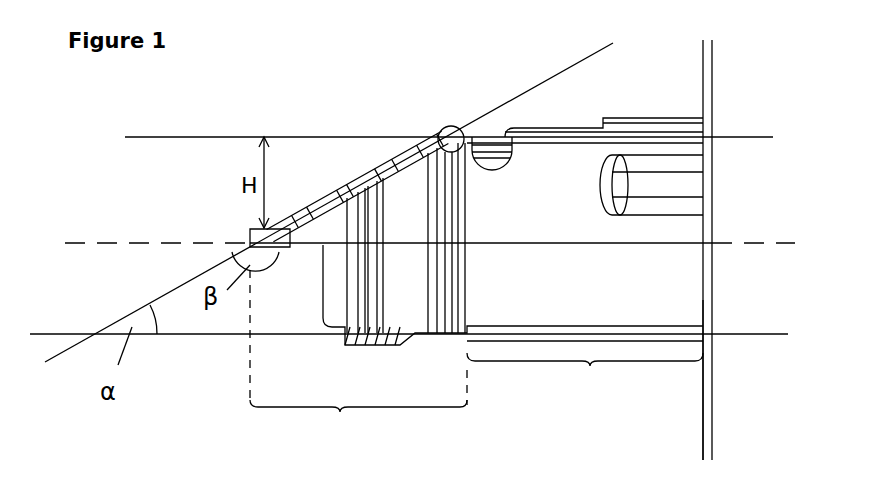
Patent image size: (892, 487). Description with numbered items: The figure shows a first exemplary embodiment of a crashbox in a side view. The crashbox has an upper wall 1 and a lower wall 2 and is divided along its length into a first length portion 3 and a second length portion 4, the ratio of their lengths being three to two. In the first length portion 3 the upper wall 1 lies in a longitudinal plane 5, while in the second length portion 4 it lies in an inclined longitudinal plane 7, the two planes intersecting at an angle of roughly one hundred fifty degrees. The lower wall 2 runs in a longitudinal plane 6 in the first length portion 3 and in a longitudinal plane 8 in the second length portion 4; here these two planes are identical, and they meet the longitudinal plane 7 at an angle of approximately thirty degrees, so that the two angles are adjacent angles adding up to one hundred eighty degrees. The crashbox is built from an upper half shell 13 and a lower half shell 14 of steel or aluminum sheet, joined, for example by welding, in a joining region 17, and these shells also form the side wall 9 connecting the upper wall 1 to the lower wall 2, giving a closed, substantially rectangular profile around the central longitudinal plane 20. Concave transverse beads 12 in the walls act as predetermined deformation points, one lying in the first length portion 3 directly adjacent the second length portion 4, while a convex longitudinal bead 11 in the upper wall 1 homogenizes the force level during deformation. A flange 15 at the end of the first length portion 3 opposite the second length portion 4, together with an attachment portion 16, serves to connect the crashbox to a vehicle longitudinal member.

The upper wall 1 is at (335, 185).
The lower wall 2 is at (350, 345).
The first length portion 3 is at (585, 381).
The second length portion 4 is at (358, 362).
The longitudinal plane 5 is at (729, 134).
The longitudinal plane 6 is at (735, 336).
The longitudinal plane 7 is at (553, 78).
The longitudinal plane 8 is at (712, 460).
The side wall 9 is at (622, 235).
The longitudinal bead 11 is at (657, 118).
The transverse bead 12 is at (365, 215).
The upper half shell 13 is at (742, 200).
The lower half shell 14 is at (739, 305).
The flange 15 is at (713, 55).
The attachment portion 16 is at (260, 228).
The joining region 17 is at (640, 247).
The central longitudinal plane 20 is at (72, 238).